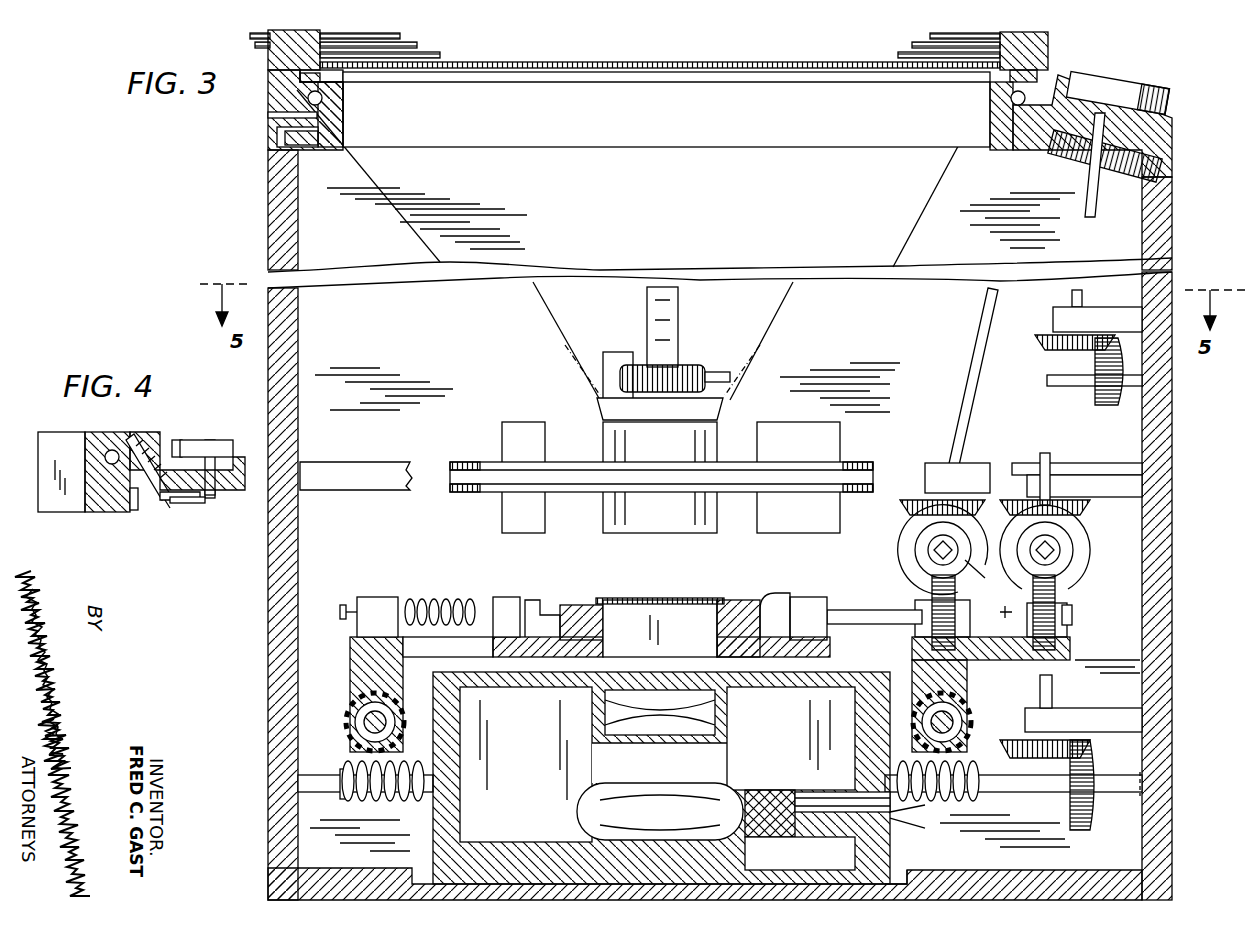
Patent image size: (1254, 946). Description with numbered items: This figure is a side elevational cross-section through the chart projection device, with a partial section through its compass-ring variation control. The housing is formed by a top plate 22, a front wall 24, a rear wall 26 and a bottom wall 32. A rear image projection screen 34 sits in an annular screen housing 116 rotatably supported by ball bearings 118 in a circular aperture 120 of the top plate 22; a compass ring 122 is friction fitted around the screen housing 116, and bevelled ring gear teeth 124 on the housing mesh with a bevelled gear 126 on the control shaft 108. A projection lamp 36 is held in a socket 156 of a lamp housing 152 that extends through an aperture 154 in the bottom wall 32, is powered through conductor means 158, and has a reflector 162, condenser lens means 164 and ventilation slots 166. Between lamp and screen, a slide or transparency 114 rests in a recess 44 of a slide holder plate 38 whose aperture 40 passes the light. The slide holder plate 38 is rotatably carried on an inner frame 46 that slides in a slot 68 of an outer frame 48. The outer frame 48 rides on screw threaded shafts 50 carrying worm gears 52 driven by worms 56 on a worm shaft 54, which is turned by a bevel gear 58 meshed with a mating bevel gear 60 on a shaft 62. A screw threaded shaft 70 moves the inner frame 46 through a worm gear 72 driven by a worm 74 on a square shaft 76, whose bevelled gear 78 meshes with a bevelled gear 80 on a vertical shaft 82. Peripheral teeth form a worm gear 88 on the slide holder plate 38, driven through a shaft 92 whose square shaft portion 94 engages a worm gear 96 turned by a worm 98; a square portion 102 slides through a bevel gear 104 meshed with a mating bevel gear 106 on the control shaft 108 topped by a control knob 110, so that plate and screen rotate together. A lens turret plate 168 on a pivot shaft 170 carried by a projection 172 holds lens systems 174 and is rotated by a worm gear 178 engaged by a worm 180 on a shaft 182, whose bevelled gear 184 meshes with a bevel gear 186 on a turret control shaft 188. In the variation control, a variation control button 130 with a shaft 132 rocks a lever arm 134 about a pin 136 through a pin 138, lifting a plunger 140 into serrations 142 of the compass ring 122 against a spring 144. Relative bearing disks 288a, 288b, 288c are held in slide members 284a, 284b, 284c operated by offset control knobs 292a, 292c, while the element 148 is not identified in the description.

In FIG. 3, the top plate 22 is at (1060, 86).
In FIG. 4, the top plate 22 is at (240, 480).
In FIG. 3, the front wall 24 is at (1172, 219).
In FIG. 3, the rear wall 26 is at (268, 222).
In FIG. 3, the bottom wall 32 is at (1062, 878).
In FIG. 3, the rear image projection screen 34 is at (560, 78).
In FIG. 4, the rear image projection screen 34 is at (50, 438).
In FIG. 3, the projection lamp 36 is at (710, 790).
In FIG. 3, the slide holder plate 38 is at (760, 593).
In FIG. 3, the aperture 40 is at (700, 600).
In FIG. 3, the recess 44 is at (722, 600).
In FIG. 3, the inner frame 46 is at (500, 637).
In FIG. 3, the outer frame 48 is at (352, 640).
In FIG. 3, the screw threaded shafts 50 is at (365, 710).
In FIG. 3, the worm gear 52 is at (348, 738).
In FIG. 3, the worm shaft 54 is at (322, 795).
In FIG. 3, the worms 56 is at (392, 802).
In FIG. 3, the bevel gear 58 is at (1090, 765).
In FIG. 3, the mating bevel gear 60 is at (1015, 750).
In FIG. 3, the perpendicular shaft 62 is at (1055, 685).
In FIG. 3, the slot 68 is at (872, 610).
In FIG. 3, the screw threaded shaft 70 is at (432, 603).
In FIG. 3, the worm gear 72 is at (1072, 610).
In FIG. 3, the worm 74 is at (1062, 540).
In FIG. 3, the square shaft 76 is at (1058, 554).
In FIG. 3, the bevelled gear 78 is at (1088, 578).
In FIG. 3, the mating bevelled gear 80 is at (1085, 510).
In FIG. 3, the vertical shaft 82 is at (1040, 463).
In FIG. 3, the worm gear 88 is at (578, 605).
In FIG. 3, the shaft 92 is at (535, 600).
In FIG. 3, the square shaft portion 94 is at (928, 612).
In FIG. 3, the worm gear 96 is at (932, 598).
In FIG. 3, the worm 98 is at (986, 575).
In FIG. 3, the square portion 102 is at (935, 550).
In FIG. 3, the bevel gear 104 is at (900, 530).
In FIG. 3, the mating bevel gear 106 is at (912, 500).
In FIG. 3, the control shaft 108 is at (1100, 213).
In FIG. 3, the control knob 110 is at (1130, 95).
In FIG. 3, the slide or transparency 114 is at (612, 588).
In FIG. 3, the screen housing 116 is at (322, 152).
In FIG. 4, the screen housing 116 is at (100, 445).
In FIG. 3, the ball bearings 118 is at (345, 112).
In FIG. 3, the circular aperture 120 is at (268, 115).
In FIG. 3, the compass ring 122 is at (323, 98).
In FIG. 4, the compass ring 122 is at (116, 448).
In FIG. 3, the bevelled ring gear teeth 124 is at (280, 138).
In FIG. 3, the bevelled gear 126 is at (1162, 165).
In FIG. 4, the variation control button 130 is at (228, 443).
In FIG. 4, the shaft 132 is at (212, 440).
In FIG. 4, the lever arm 134 is at (205, 503).
In FIG. 4, the pin 136 is at (178, 500).
In FIG. 4, the pin 138 is at (182, 445).
In FIG. 4, the plunger 140 is at (128, 505).
In FIG. 4, the serrations 142 is at (150, 440).
In FIG. 4, the spring 144 is at (160, 505).
In FIG. 3, the tape 148 is at (580, 64).
In FIG. 3, the lamp housing 152 is at (775, 737).
In FIG. 3, the aperture 154 is at (895, 880).
In FIG. 3, the socket 156 is at (772, 792).
In FIG. 3, the conductor means 158 is at (935, 818).
In FIG. 3, the reflector 162 is at (582, 836).
In FIG. 3, the condenser lens means 164 is at (605, 725).
In FIG. 3, the ventilation slots 166 is at (490, 880).
In FIG. 3, the turret plate 168 is at (742, 462).
In FIG. 3, the pivot shaft 170 is at (669, 354).
In FIG. 3, the projection 172 is at (725, 405).
In FIG. 3, the lens systems 174 is at (502, 443).
In FIG. 3, the worm gear 178 is at (618, 372).
In FIG. 3, the worm 180 is at (692, 365).
In FIG. 3, the shaft 182 is at (718, 372).
In FIG. 3, the bevelled gear 184 is at (1120, 405).
In FIG. 3, the bevel gear 186 is at (1040, 340).
In FIG. 3, the turret control shaft 188 is at (1072, 300).
In FIG. 3, the slide member 284a is at (305, 34).
In FIG. 3, the slide member 284b is at (300, 76).
In FIG. 3, the slide member 284c is at (305, 82).
In FIG. 3, the relative bearing disk 288a is at (400, 37).
In FIG. 3, the relative bearing disk 288b is at (417, 46).
In FIG. 3, the relative bearing disk 288c is at (440, 56).
In FIG. 3, the control knob 292a is at (250, 37).
In FIG. 3, the control knob 292c is at (255, 47).